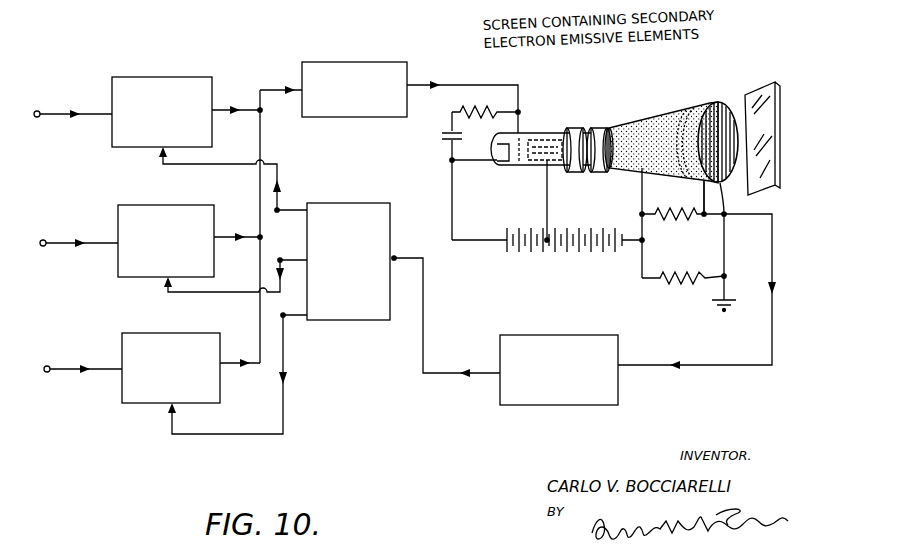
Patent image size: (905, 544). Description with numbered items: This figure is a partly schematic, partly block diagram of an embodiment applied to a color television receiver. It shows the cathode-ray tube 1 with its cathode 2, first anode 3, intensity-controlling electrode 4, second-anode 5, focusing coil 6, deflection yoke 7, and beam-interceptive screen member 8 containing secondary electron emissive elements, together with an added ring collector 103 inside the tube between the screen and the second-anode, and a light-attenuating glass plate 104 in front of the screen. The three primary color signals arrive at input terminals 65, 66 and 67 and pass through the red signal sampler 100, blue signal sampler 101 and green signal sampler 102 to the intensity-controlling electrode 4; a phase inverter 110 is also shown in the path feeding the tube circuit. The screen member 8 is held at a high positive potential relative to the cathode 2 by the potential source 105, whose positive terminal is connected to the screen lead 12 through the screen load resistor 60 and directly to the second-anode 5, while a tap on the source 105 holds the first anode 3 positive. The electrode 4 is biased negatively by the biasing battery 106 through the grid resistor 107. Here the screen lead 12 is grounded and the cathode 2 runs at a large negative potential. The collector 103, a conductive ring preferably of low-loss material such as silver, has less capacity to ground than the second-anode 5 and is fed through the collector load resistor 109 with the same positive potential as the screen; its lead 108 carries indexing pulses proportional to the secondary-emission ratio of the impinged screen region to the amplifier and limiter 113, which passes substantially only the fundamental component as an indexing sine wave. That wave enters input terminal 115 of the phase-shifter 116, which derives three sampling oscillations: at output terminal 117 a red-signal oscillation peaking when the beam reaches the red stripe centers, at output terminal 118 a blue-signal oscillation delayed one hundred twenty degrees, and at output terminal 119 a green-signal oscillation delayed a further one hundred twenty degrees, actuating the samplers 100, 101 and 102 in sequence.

The cathode-ray tube 1 is at (562, 128).
The cathode 2 is at (497, 146).
The first anode 3 is at (539, 162).
The intensity-controlling electrode 4 is at (521, 140).
The second-anode 5 is at (656, 122).
The focusing coil 6 is at (579, 172).
The deflection yoke 7 is at (599, 172).
The beam-interceptive screen member 8 is at (718, 103).
The screen lead 12 is at (728, 215).
The screen load resistor 60 is at (670, 279).
The input terminal 65 is at (39, 110).
The input terminal 66 is at (47, 239).
The input terminal 67 is at (49, 365).
The red signal sampler 100 is at (169, 77).
The blue signal sampler 101 is at (173, 205).
The green signal sampler 102 is at (177, 333).
The ring collector 103 is at (696, 110).
The light-attenuating glass plate 104 is at (760, 85).
The potential source 105 is at (558, 273).
The biasing battery 106 is at (441, 138).
The grid resistor 107 is at (459, 112).
The lead 108 is at (703, 194).
The collector load resistor 109 is at (664, 216).
The phase inverter 110 is at (380, 62).
The amplifier and limiter 113 is at (565, 405).
The input terminal 115 is at (402, 252).
The phase-shifter 116 is at (350, 203).
The output terminal 117 is at (279, 212).
The output terminal 118 is at (283, 263).
The output terminal 119 is at (285, 318).